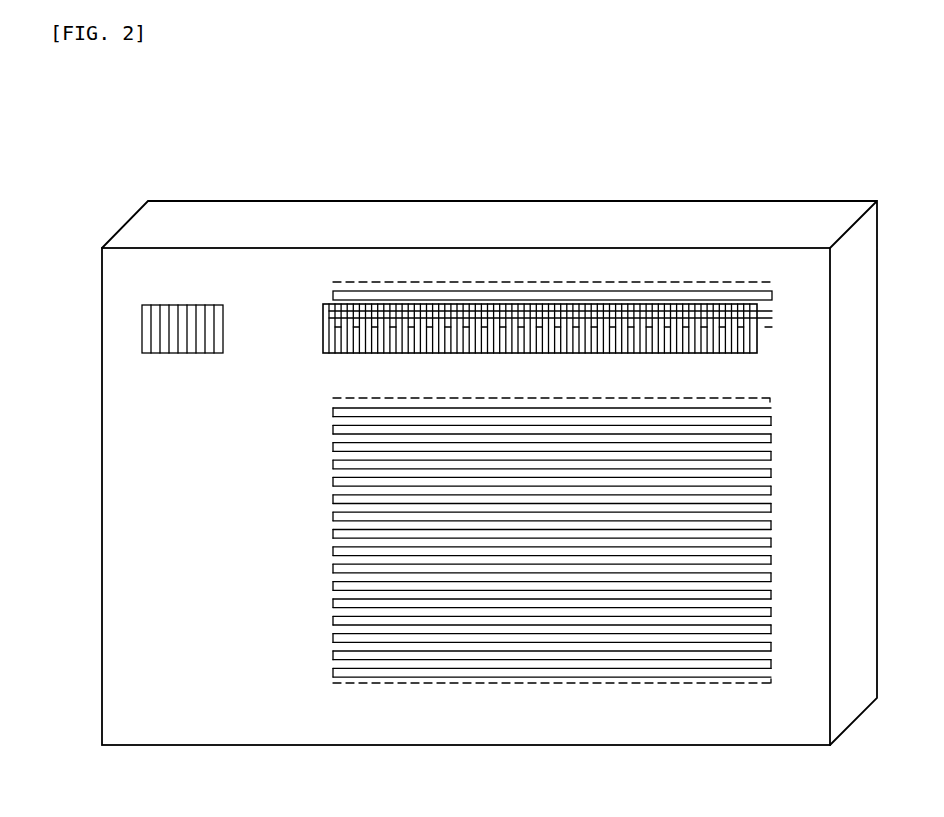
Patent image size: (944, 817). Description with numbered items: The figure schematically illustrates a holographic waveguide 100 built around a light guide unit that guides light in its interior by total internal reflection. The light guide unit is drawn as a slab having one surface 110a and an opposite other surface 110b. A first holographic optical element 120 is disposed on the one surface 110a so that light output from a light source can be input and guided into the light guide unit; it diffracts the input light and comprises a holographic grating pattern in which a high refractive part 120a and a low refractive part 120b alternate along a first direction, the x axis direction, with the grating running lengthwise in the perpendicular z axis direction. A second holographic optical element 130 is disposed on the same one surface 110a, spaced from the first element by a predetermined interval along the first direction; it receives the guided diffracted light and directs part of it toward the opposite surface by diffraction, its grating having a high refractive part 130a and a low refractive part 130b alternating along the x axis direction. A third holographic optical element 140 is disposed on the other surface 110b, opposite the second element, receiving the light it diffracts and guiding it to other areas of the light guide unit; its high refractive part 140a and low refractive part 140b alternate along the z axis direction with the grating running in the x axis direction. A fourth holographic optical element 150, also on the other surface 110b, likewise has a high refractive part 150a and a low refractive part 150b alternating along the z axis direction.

The holographic waveguide 100 is at (70, 155).
The one surface of the light guide unit 110a is at (102, 292).
The other surface of the light guide unit 110b is at (197, 200).
The first holographic optical element 120 is at (145, 355).
The high refractive part 120a is at (203, 310).
The low refractive part 120b is at (167, 312).
The second holographic optical element 130 is at (323, 353).
The high refractive part 130a is at (727, 354).
The low refractive part 130b is at (653, 354).
The third holographic optical element 140 is at (333, 282).
The high refractive part 140a is at (762, 291).
The low refractive part 140b is at (690, 288).
The fourth holographic optical element 150 is at (368, 684).
The high refractive part 150a is at (343, 625).
The low refractive part 150b is at (358, 657).